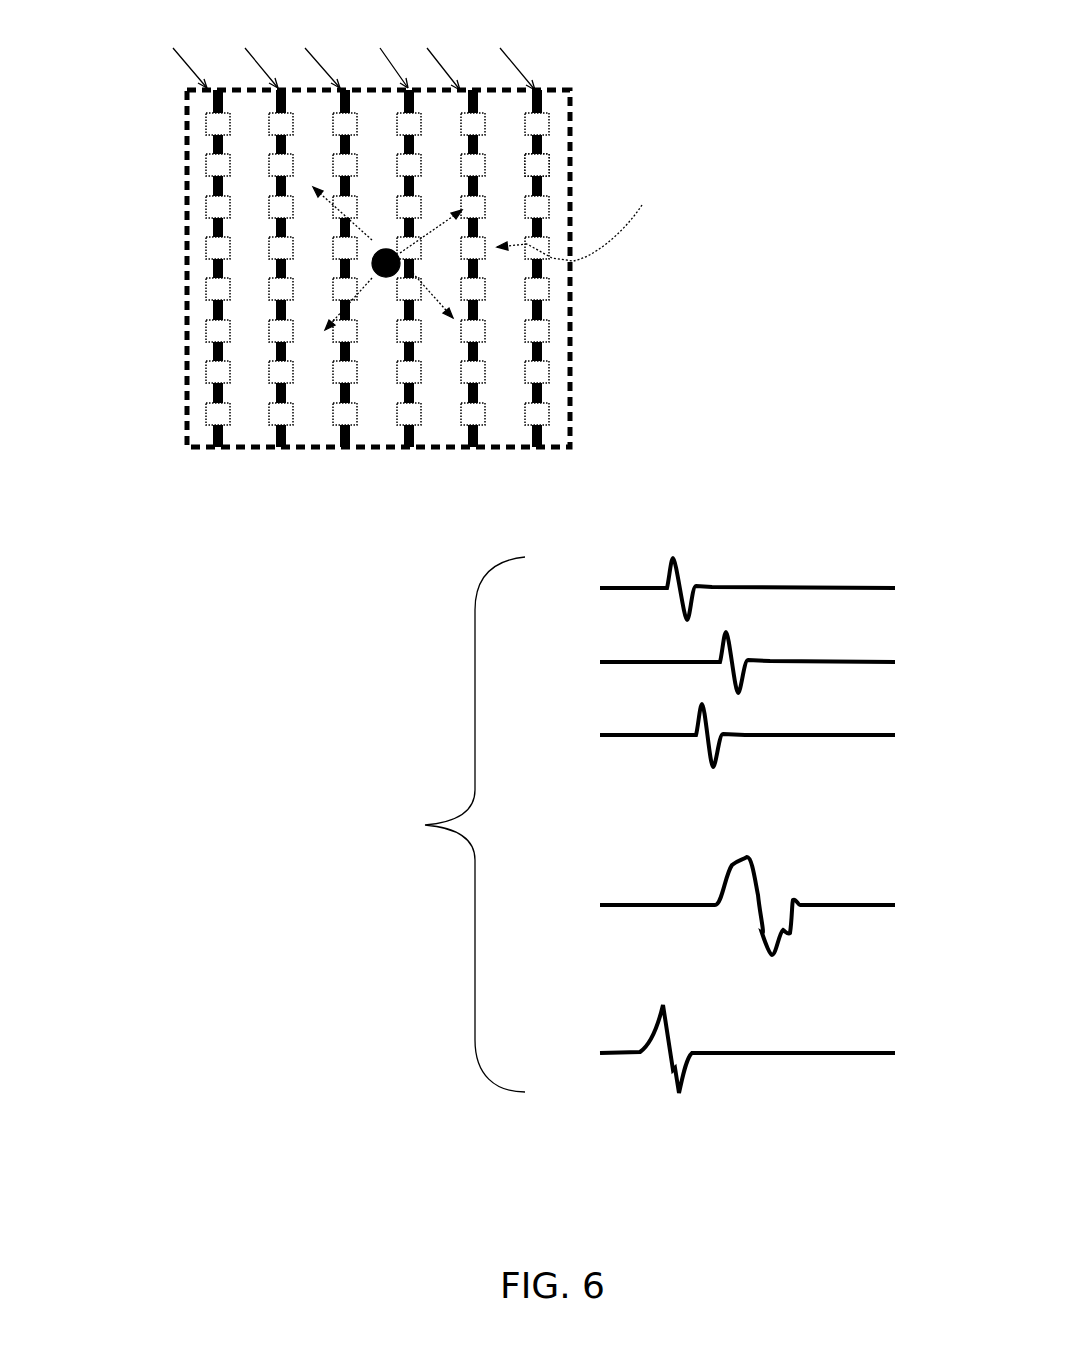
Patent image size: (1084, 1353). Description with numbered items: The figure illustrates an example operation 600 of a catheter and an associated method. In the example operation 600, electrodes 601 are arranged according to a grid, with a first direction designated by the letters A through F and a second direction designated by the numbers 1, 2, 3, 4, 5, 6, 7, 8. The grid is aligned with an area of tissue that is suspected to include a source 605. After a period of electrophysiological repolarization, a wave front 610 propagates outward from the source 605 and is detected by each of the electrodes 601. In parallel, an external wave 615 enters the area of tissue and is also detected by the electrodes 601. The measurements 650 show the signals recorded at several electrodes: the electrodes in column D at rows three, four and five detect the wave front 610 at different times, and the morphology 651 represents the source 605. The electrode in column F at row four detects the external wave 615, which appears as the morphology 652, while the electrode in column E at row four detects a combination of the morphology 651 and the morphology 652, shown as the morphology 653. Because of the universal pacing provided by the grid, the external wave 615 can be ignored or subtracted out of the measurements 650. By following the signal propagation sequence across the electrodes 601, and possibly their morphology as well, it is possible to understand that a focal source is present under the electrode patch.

The example operation 600 is at (685, 80).
The electrodes 601 is at (552, 153).
The source 605 is at (403, 266).
The wave front 610 is at (368, 290).
The external wave 615 is at (625, 218).
The measurements 650 is at (634, 789).
The morphology 651 is at (692, 562).
The morphology 652 is at (673, 1027).
The morphology 653 is at (765, 882).
The number designating the second direction of the grid 1 is at (180, 127).
The number designating the second direction of the grid 2 is at (180, 171).
The number designating the second direction of the grid 3 is at (180, 215).
The number designating the second direction of the grid 4 is at (180, 259).
The number designating the second direction of the grid 5 is at (180, 303).
The number designating the second direction of the grid 6 is at (180, 347).
The number designating the second direction of the grid 7 is at (180, 391).
The number designating the second direction of the grid 8 is at (180, 435).